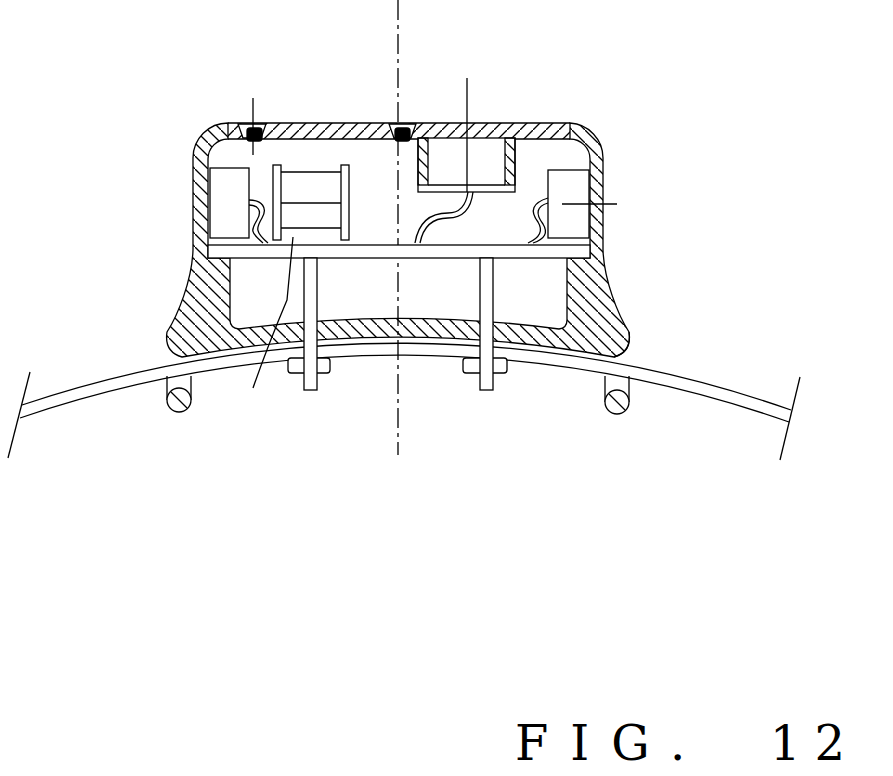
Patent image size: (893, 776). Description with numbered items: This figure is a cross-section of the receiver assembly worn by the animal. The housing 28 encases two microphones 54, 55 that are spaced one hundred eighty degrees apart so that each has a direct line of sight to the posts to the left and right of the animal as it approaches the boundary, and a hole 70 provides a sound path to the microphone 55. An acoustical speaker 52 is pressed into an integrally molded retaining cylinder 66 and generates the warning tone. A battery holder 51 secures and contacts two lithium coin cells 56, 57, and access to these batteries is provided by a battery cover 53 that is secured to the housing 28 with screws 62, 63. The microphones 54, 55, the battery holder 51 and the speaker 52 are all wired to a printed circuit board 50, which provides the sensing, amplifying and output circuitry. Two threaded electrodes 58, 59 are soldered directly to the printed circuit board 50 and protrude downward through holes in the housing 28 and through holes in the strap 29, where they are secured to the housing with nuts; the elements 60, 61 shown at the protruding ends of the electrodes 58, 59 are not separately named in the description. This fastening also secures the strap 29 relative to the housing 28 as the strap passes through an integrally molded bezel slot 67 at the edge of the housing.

The housing 28 is at (602, 160).
The strap 29 is at (95, 396).
The printed circuit board 50 is at (527, 263).
The battery holder 51 is at (474, 145).
The acoustical speaker 52 is at (483, 136).
The battery cover 53 is at (337, 123).
The microphone 54 is at (248, 203).
The microphone 55 is at (576, 191).
The lithium coin cell 56 is at (302, 182).
The lithium coin cell 57 is at (293, 215).
The threaded electrode 58 is at (312, 391).
The threaded electrode 59 is at (490, 392).
The washer 60 is at (510, 372).
The nut 61 is at (333, 365).
The screw 62 is at (248, 122).
The screw 63 is at (396, 124).
The retaining cylinder 66 is at (517, 172).
The bezel slot 67 is at (632, 363).
The hole 70 is at (617, 205).